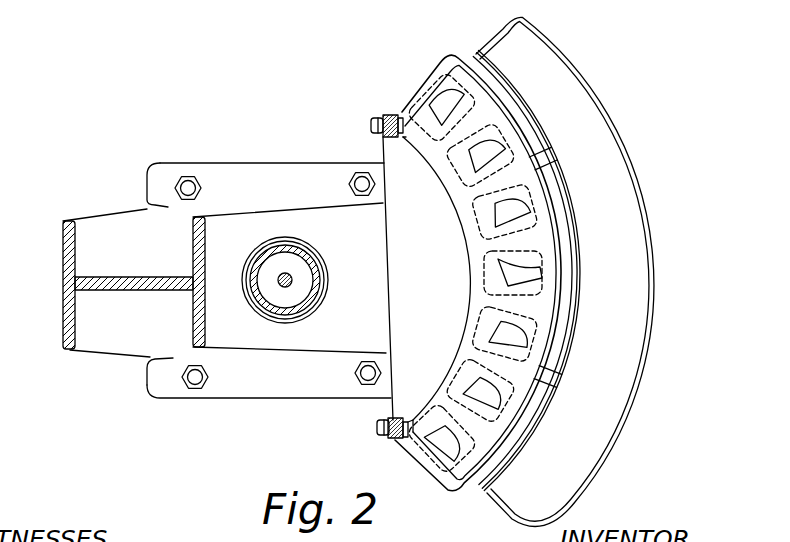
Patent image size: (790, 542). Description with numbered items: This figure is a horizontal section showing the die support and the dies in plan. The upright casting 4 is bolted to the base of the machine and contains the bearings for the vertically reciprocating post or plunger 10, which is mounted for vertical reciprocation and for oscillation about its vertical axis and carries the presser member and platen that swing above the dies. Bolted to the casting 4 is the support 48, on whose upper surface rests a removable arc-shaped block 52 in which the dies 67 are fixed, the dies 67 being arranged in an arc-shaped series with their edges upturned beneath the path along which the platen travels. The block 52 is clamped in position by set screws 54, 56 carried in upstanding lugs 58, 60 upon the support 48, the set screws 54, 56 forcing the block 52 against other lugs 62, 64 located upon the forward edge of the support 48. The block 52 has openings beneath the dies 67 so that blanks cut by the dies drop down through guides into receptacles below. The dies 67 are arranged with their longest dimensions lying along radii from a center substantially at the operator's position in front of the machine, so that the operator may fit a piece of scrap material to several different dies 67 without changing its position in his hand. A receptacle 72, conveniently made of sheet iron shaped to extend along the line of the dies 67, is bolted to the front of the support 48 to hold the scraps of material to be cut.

The upright casting 4 is at (95, 322).
The post or plunger 10 is at (307, 258).
The support 48 is at (403, 183).
The arc-shaped block 52 is at (473, 249).
The set screw 54 is at (377, 122).
The set screw 56 is at (377, 428).
The upstanding lug 58 is at (390, 114).
The upstanding lug 60 is at (395, 440).
The lug 62 is at (543, 162).
The lug 64 is at (552, 380).
The dies 67 is at (492, 332).
The receptacle 72 is at (573, 82).